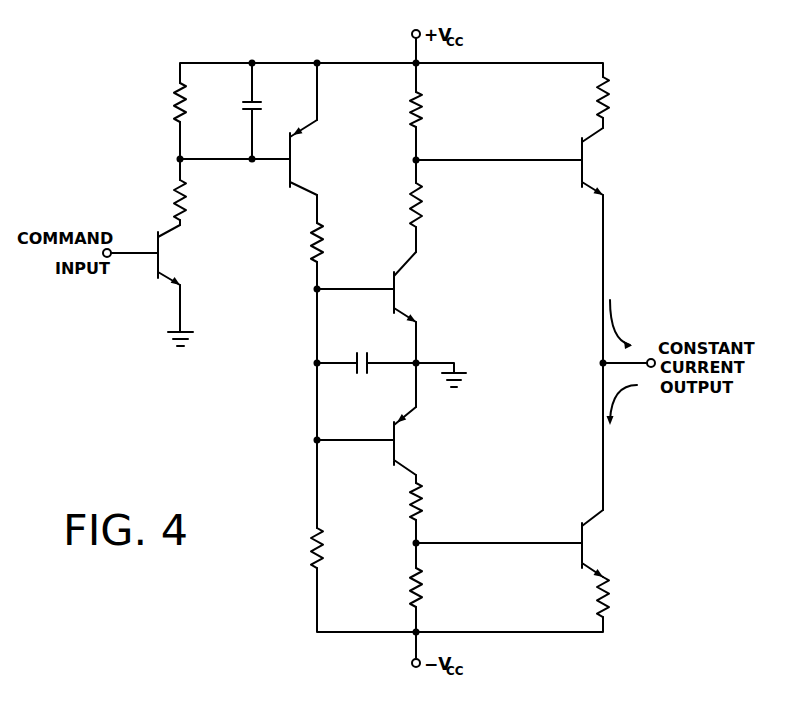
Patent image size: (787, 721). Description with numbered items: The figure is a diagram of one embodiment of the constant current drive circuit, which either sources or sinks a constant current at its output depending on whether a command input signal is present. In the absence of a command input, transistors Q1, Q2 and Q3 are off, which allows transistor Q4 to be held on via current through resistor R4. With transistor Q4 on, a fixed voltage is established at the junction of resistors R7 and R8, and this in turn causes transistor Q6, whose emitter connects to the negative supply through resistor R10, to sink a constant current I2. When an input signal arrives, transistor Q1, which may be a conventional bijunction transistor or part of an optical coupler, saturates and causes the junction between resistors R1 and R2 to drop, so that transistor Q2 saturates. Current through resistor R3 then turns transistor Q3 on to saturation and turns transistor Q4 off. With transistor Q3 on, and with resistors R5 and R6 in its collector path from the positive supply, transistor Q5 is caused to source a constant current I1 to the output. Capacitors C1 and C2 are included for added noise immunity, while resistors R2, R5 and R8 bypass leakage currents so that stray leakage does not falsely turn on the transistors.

The resistor R1 is at (166, 200).
The resistor R2 is at (167, 102).
The resistor R3 is at (333, 242).
The resistor R4 is at (477, 322).
The resistor R5 is at (432, 109).
The resistor R6 is at (432, 205).
The resistor R7 is at (432, 501).
The resistor R8 is at (432, 587).
The resistor R10 is at (624, 597).
The capacitor C1 is at (238, 105).
The capacitor C2 is at (366, 376).
The transistor Q1 is at (178, 255).
The transistor Q2 is at (311, 157).
The transistor Q3 is at (415, 287).
The transistor Q4 is at (415, 441).
The transistor Q5 is at (601, 161).
The transistor Q6 is at (603, 543).
The constant current I1 is at (622, 324).
The constant current I2 is at (622, 409).